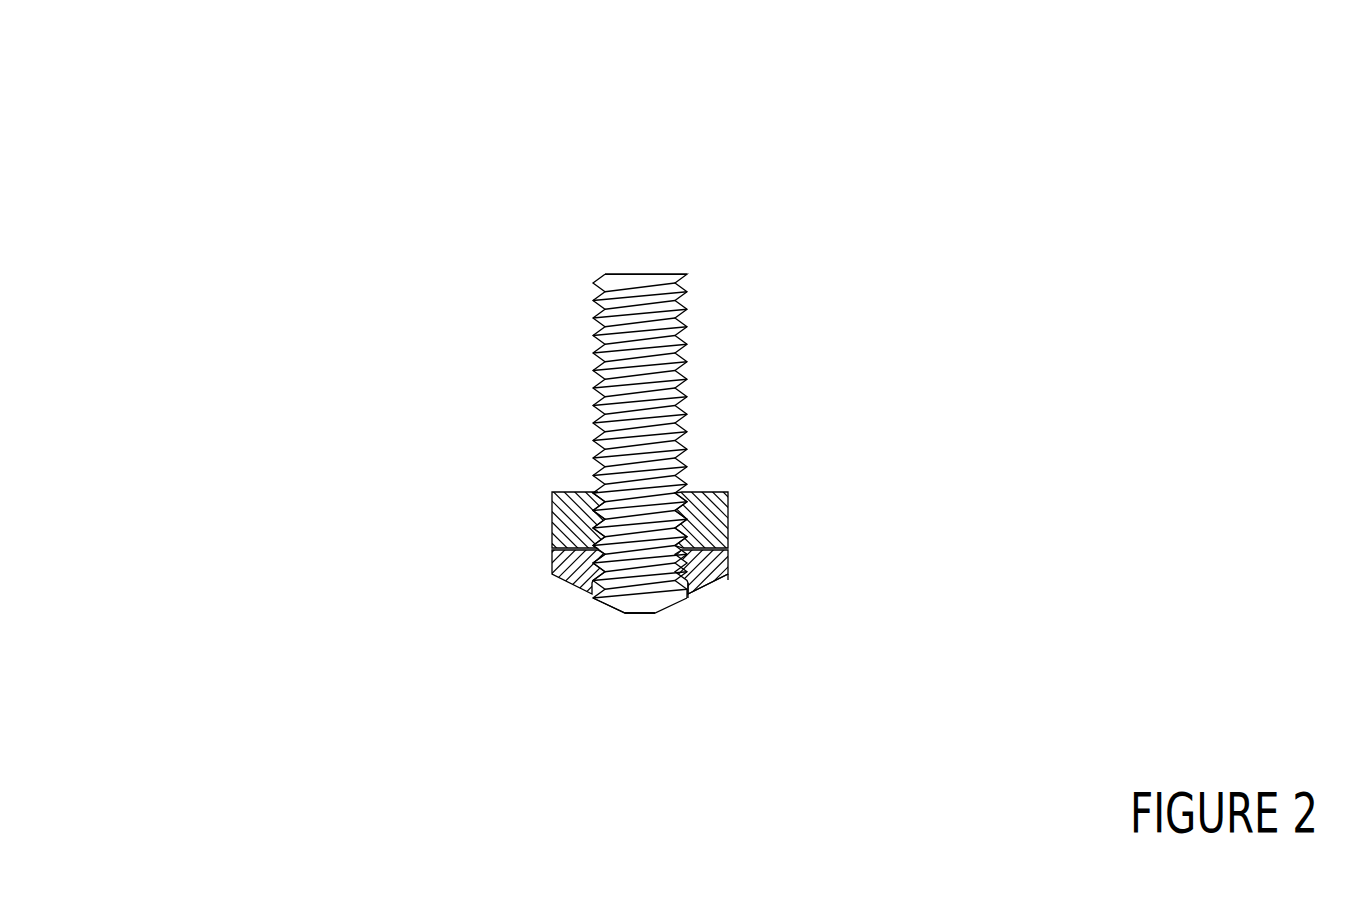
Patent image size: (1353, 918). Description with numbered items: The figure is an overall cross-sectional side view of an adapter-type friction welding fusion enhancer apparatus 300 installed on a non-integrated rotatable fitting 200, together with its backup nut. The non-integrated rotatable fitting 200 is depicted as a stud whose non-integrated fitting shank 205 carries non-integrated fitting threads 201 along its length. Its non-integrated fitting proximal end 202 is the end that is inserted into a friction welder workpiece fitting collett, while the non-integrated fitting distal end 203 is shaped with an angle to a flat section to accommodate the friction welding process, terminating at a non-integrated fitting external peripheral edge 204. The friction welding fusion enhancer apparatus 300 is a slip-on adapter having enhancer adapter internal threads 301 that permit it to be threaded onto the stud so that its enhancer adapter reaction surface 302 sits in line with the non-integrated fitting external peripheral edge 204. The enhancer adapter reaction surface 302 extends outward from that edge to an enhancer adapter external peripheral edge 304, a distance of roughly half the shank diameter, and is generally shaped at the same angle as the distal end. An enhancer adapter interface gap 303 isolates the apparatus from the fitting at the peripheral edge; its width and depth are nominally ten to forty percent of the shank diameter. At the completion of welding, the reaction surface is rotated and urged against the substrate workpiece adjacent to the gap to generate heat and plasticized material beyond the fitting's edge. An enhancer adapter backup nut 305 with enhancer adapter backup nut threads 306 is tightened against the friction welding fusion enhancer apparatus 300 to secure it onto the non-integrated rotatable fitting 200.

The non-integrated rotatable fitting 200 is at (602, 320).
The non-integrated fitting threads 201 is at (548, 308).
The non-integrated fitting proximal end 202 is at (640, 318).
The non-integrated fitting distal end 203 is at (392, 341).
The non-integrated fitting external peripheral edge 204 is at (441, 331).
The non-integrated fitting shank 205 is at (504, 313).
The friction welding fusion enhancer apparatus 300 is at (694, 314).
The enhancer adapter internal threads 301 is at (741, 314).
The enhancer adapter reaction surface 302 is at (969, 324).
The enhancer adapter interface gap 303 is at (1019, 340).
The enhancer adapter external peripheral edge 304 is at (940, 313).
The enhancer adapter backup nut 305 is at (641, 314).
The enhancer adapter backup nut threads 306 is at (645, 314).